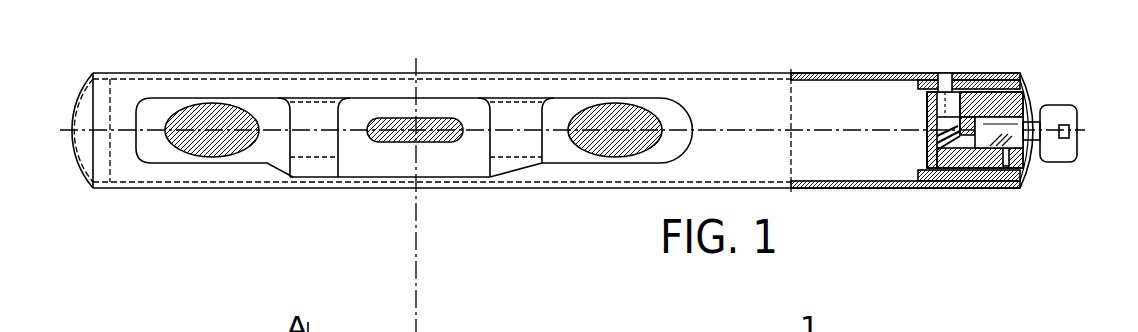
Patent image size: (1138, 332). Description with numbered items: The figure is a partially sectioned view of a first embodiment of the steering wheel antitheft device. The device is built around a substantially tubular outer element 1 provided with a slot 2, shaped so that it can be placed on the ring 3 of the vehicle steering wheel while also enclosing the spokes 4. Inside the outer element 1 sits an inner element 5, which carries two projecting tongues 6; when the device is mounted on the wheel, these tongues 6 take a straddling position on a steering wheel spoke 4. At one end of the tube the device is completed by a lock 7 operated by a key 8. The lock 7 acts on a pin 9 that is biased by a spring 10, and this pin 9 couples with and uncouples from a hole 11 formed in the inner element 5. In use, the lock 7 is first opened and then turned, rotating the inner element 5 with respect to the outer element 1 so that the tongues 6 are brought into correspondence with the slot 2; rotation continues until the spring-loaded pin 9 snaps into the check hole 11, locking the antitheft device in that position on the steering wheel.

The tubular outer element 1 is at (724, 73).
The slot 2 is at (568, 148).
The ring 3 is at (213, 152).
The spokes 4 is at (387, 130).
The inner element 5 is at (826, 80).
The projecting tongues 6 is at (318, 145).
The lock 7 is at (1030, 117).
The key 8 is at (1077, 148).
The pin 9 is at (928, 108).
The spring 10 is at (944, 150).
The hole 11 is at (952, 78).